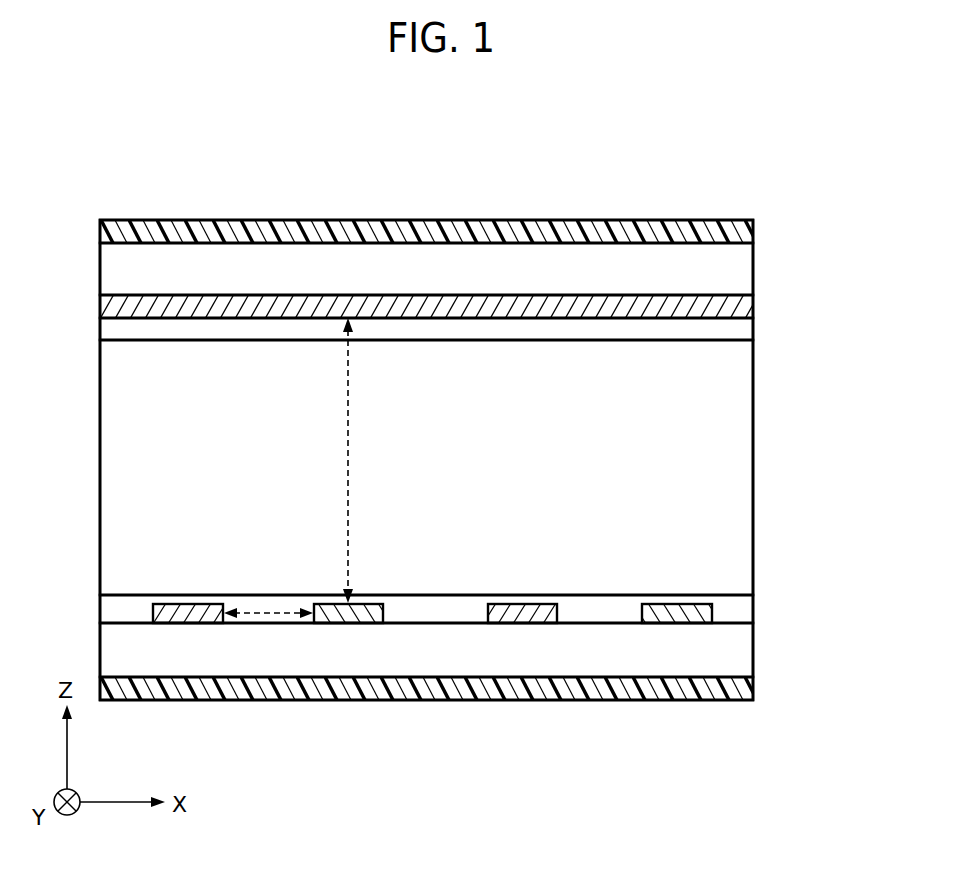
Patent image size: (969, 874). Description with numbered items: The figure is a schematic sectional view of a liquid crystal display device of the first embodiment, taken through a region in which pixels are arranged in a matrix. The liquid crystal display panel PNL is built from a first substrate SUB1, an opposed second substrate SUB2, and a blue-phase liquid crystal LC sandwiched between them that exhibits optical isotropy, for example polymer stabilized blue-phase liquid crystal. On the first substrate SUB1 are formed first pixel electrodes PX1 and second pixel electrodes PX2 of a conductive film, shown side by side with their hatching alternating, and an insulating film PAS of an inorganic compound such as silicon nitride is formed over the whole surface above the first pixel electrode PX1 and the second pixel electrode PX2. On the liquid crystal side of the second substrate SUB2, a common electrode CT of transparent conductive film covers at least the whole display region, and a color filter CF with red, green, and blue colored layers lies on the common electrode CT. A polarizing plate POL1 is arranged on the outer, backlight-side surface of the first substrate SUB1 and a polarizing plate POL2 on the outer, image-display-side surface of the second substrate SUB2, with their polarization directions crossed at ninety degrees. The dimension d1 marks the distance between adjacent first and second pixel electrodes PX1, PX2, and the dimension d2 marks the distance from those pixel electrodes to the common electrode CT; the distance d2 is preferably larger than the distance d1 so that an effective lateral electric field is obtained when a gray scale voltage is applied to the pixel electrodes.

The liquid crystal display panel PNL is at (736, 155).
The polarizing plate POL2 is at (752, 232).
The second substrate SUB2 is at (738, 269).
The common electrode CT is at (740, 305).
The color filter CF is at (740, 331).
The blue-phase liquid crystal LC is at (740, 460).
The insulating film PAS is at (740, 610).
The first substrate SUB1 is at (740, 654).
The polarizing plate POL1 is at (740, 688).
The first pixel electrode PX1 is at (195, 613).
The second pixel electrode PX2 is at (368, 615).
The distance between the first pixel electrode and the second pixel electrode d1 is at (268, 588).
The distance between the pixel electrodes and the common electrode d2 is at (363, 460).